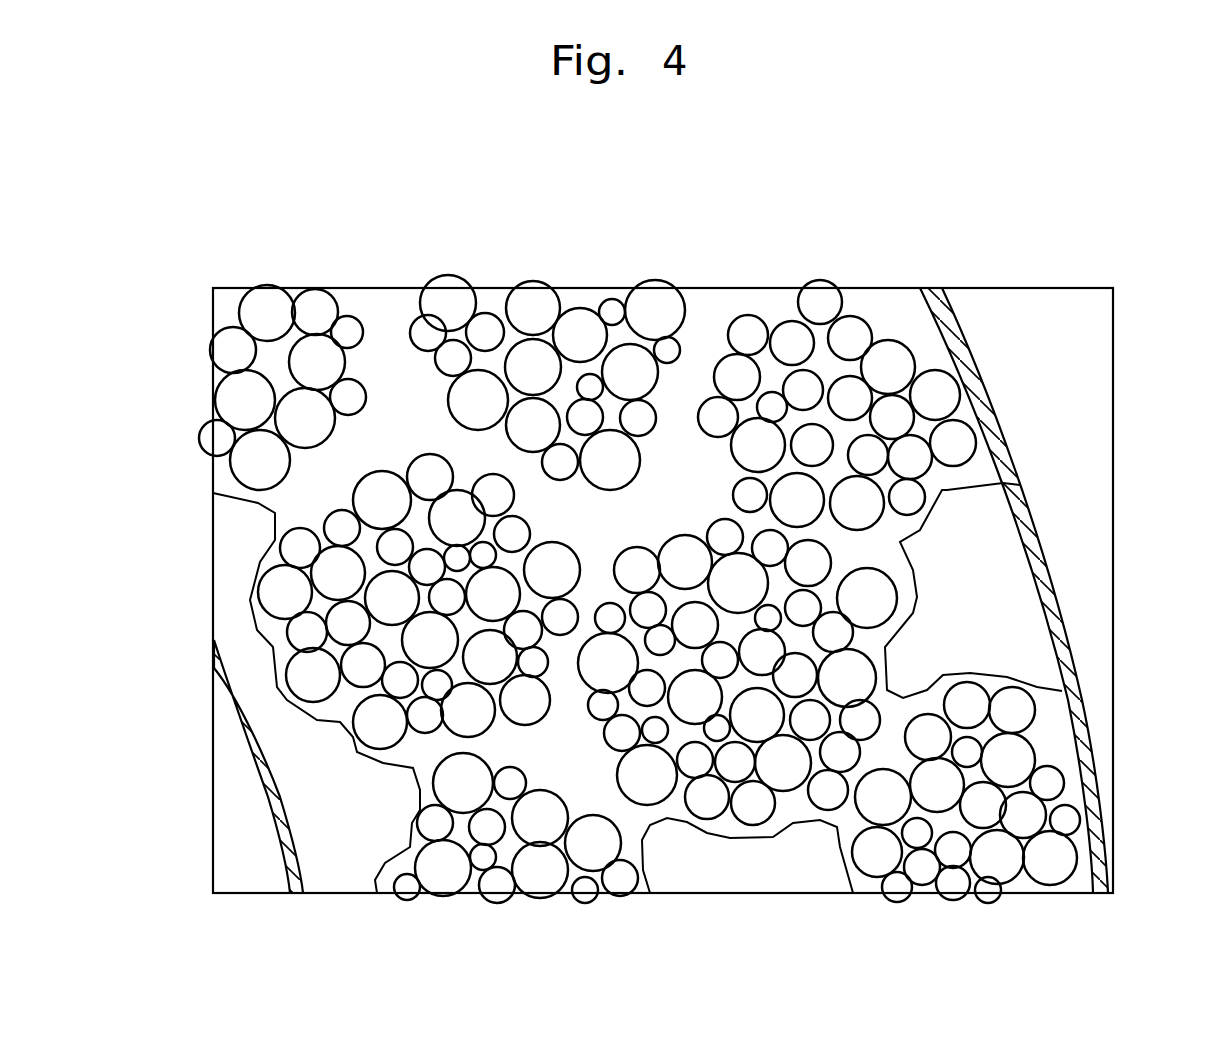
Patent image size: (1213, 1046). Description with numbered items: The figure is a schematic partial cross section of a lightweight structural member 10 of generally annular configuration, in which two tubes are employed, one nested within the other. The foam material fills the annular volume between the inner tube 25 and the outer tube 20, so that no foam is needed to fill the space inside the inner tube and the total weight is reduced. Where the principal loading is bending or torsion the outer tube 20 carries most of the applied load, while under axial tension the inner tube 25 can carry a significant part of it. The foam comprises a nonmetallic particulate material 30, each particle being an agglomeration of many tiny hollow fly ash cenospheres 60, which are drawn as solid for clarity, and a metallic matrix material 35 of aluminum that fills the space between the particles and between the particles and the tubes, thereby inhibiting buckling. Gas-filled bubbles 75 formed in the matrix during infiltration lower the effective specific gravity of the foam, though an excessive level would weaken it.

The lightweight structural member 10 is at (663, 518).
The tubular member 20 is at (976, 356).
The inner tube 25 is at (254, 771).
The nonmetallic particulate material 30 is at (495, 294).
The metallic matrix material 35 is at (303, 490).
The cenospheres 60 is at (733, 310).
The bubbles 75 is at (985, 582).